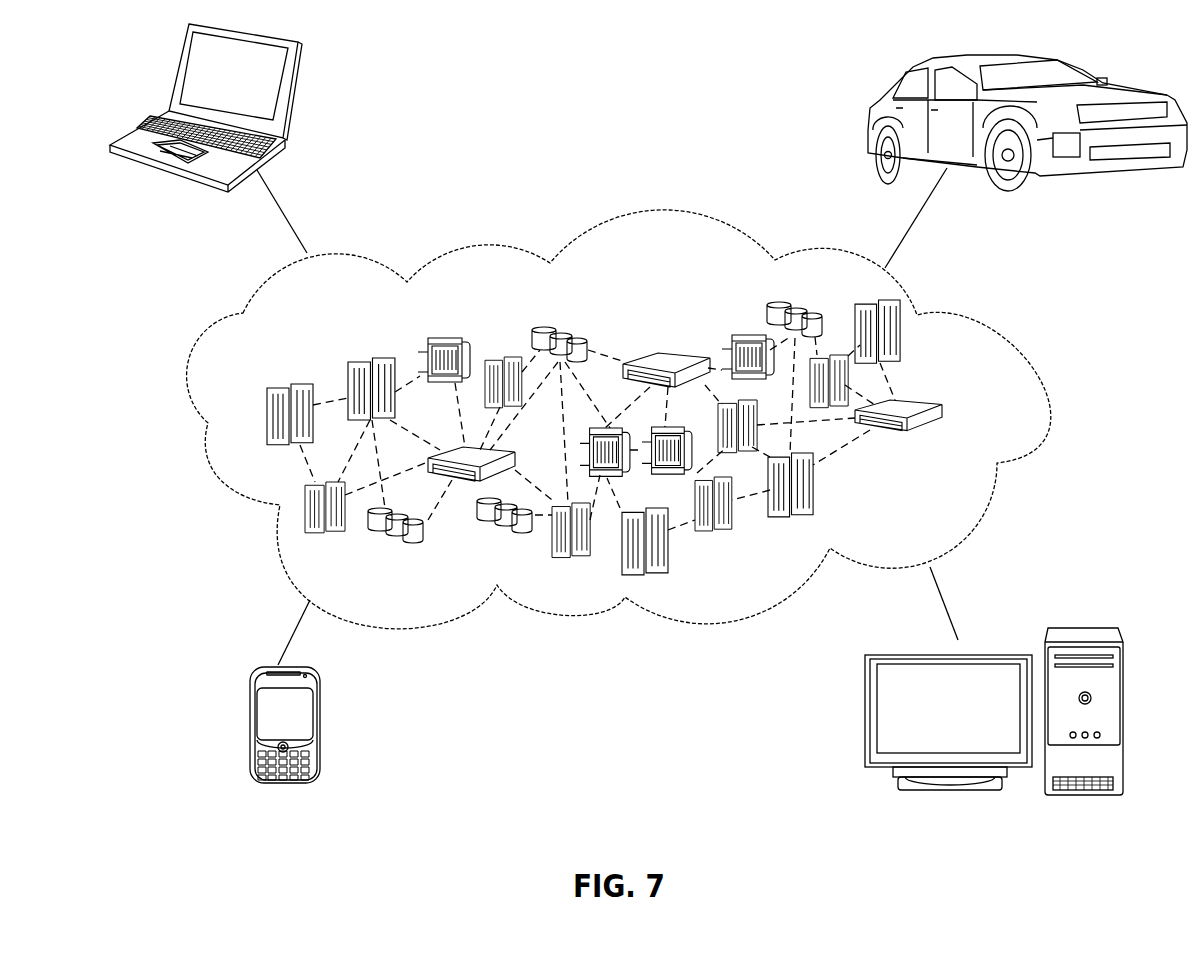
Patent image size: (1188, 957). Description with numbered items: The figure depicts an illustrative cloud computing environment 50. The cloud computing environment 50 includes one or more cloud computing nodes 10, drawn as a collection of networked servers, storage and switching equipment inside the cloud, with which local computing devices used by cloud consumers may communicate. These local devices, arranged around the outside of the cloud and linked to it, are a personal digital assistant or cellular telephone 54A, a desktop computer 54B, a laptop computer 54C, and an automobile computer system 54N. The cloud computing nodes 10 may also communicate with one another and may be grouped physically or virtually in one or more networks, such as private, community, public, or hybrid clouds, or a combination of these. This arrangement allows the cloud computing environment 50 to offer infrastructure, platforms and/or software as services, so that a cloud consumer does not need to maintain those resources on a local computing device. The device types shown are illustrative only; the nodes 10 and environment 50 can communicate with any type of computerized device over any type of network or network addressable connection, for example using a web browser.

The cloud computing environment 50 is at (1005, 328).
The cloud computing nodes 10 is at (982, 413).
The personal digital assistant (PDA) or cellular telephone 54A is at (250, 728).
The desktop computer 54B is at (1088, 625).
The laptop computer 54C is at (288, 92).
The automobile computer system 54N is at (873, 102).